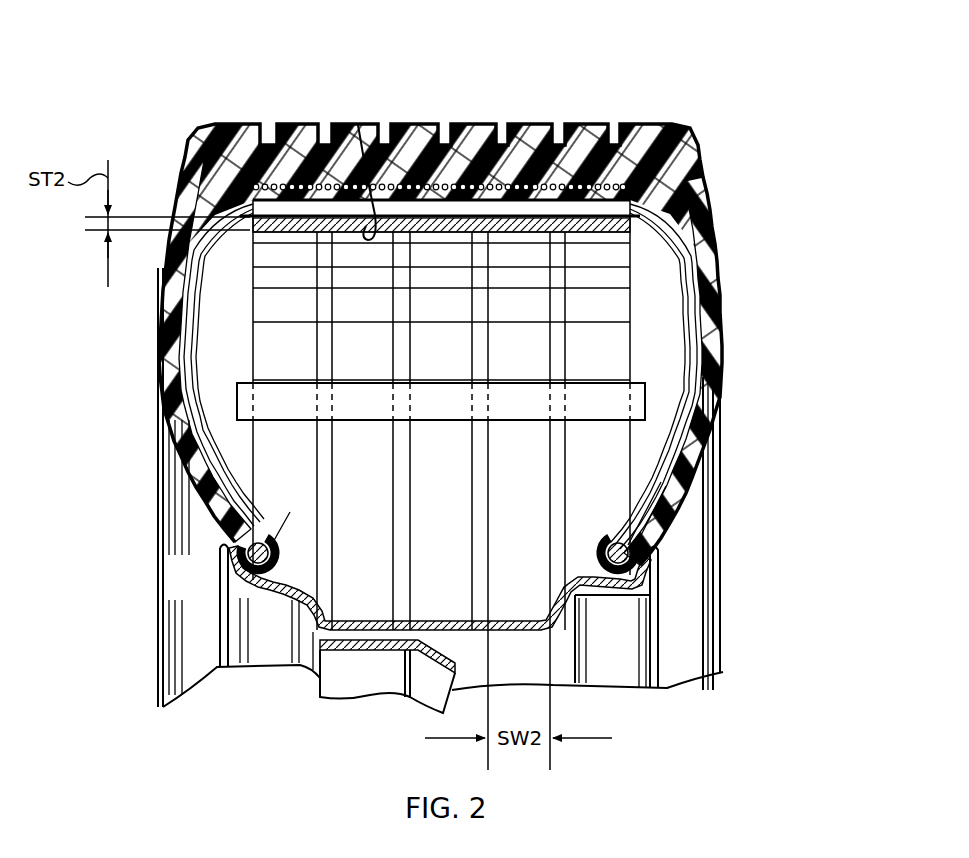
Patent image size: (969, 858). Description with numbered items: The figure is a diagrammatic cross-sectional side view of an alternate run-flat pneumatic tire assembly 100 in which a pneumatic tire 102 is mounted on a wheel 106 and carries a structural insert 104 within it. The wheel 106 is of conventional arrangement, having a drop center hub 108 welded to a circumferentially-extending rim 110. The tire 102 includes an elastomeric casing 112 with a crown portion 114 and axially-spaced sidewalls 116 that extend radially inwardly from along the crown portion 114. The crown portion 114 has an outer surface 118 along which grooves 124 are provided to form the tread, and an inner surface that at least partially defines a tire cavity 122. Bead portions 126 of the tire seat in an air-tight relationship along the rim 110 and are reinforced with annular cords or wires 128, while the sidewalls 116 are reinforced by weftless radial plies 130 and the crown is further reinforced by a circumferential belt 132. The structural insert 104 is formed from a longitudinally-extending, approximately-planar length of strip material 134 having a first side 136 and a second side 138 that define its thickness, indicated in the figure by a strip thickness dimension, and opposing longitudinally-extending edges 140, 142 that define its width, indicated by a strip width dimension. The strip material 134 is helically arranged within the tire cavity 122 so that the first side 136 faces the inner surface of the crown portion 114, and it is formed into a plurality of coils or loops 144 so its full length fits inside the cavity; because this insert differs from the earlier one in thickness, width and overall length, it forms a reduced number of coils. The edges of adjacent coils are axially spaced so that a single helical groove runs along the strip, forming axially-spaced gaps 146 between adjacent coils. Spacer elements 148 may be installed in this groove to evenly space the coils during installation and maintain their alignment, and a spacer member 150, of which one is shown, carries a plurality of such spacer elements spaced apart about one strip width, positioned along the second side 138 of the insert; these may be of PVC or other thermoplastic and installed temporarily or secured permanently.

The run-flat pneumatic tire assembly 100 is at (163, 92).
The pneumatic tire 102 is at (708, 190).
The structural insert 104 is at (247, 350).
The wheel 106 is at (210, 578).
The drop center hub 108 is at (350, 687).
The rim 110 is at (620, 678).
The elastomeric casing 112 is at (150, 372).
The crown portion 114 is at (596, 160).
The sidewalls 116 is at (172, 426).
The outer surface 118 is at (408, 120).
The tire cavity 122 is at (660, 314).
The grooves 124 is at (325, 140).
The bead portions 126 is at (358, 125).
The annular cords or wires 128 is at (226, 545).
The weftless radial plies 130 is at (720, 374).
The belt 132 is at (470, 228).
The length of strip material 134 is at (518, 228).
The first side 136 is at (605, 212).
The second side 138 is at (603, 245).
The edge 140 is at (392, 468).
The edge 142 is at (335, 352).
The coils or loops 144 is at (593, 465).
The axially-spaced gaps 146 is at (553, 366).
The spacer elements 148 is at (470, 400).
The spacer member 150 is at (646, 398).